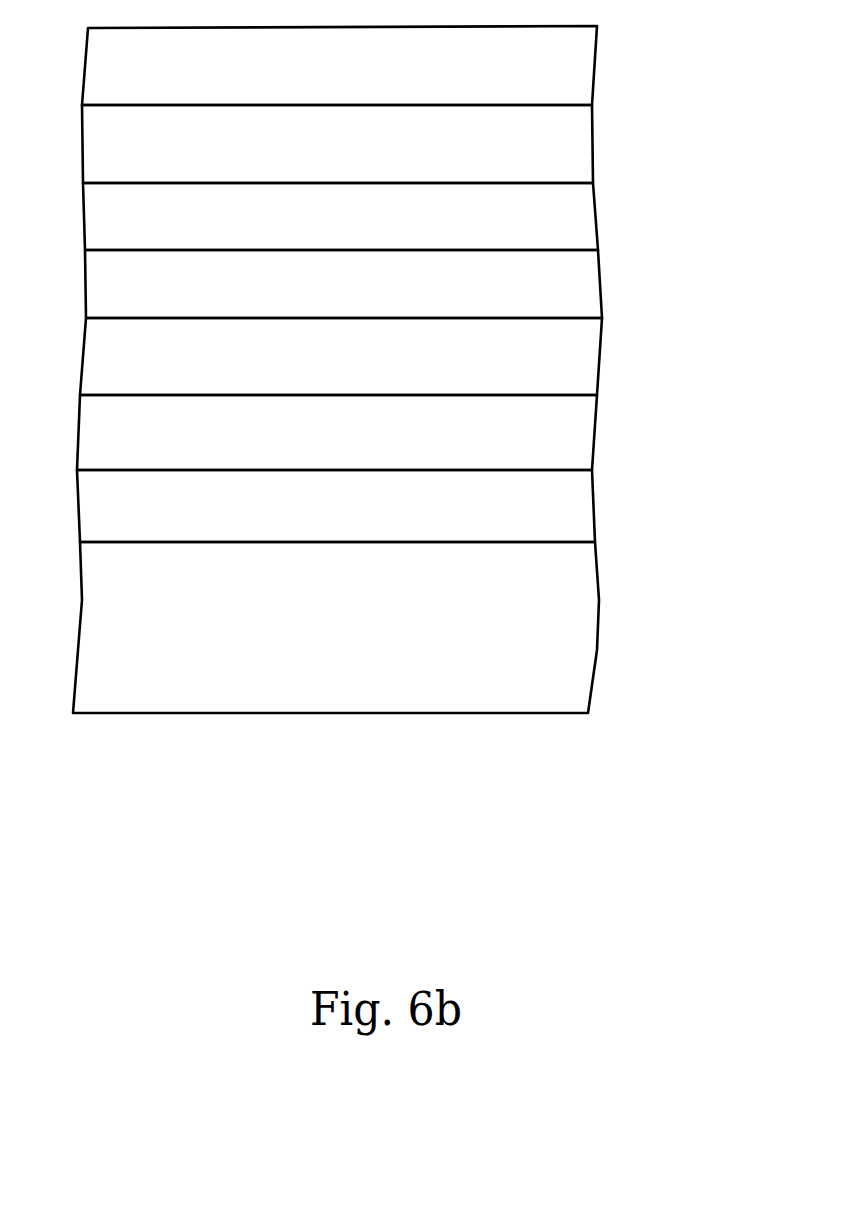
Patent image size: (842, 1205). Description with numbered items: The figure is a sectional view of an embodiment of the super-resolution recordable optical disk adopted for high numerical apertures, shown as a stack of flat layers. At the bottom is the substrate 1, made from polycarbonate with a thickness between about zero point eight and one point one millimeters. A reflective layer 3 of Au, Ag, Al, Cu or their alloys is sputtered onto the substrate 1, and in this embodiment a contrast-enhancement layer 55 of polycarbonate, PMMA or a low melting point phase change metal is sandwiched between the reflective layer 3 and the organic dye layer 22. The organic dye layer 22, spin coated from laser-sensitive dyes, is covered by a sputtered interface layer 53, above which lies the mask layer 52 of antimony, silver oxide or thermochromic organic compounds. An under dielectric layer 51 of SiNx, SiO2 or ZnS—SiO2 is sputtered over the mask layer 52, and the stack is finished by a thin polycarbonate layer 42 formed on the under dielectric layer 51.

The thin polycarbonate layer 42 is at (567, 70).
The under dielectric layer 51 is at (567, 153).
The mask layer 52 is at (567, 225).
The interface layer 53 is at (567, 295).
The organic dye layer 22 is at (567, 365).
The contrast-enhancement layer 55 is at (567, 443).
The reflective layer 3 is at (567, 517).
The substrate 1 is at (567, 647).